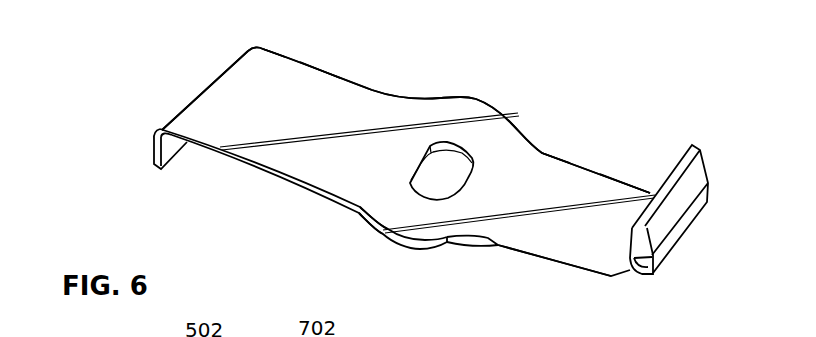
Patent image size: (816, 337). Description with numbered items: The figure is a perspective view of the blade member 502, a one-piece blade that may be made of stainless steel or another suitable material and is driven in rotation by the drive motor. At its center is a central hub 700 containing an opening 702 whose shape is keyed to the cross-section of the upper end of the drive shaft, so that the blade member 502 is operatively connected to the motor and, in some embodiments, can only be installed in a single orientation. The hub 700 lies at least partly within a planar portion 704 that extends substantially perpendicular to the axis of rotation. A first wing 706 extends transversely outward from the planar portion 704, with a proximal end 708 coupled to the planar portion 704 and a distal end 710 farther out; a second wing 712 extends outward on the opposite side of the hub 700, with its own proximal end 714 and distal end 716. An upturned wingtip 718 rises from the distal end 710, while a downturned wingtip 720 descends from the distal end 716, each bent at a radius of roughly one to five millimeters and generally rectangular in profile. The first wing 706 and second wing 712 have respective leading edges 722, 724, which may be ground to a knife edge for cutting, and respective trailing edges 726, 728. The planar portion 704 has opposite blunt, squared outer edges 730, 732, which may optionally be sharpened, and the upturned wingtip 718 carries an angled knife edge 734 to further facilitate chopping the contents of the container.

The central hub 700 is at (482, 143).
The opening 702 is at (447, 148).
The planar portion 704 is at (395, 212).
The first wing 706 is at (587, 190).
The proximal end of the first wing 708 is at (548, 152).
The distal end of the first wing 710 is at (613, 277).
The second wing 712 is at (332, 97).
The proximal end of the second wing 714 is at (327, 187).
The distal end of the second wing 716 is at (277, 53).
The upturned wingtip 718 is at (697, 177).
The downturned wingtip 720 is at (176, 156).
The leading edge of the first wing 722 is at (532, 255).
The leading edge of the second wing 724 is at (293, 60).
The trailing edge of the first wing 726 is at (620, 177).
The trailing edge of the second wing 728 is at (257, 163).
The outer edge of the planar portion 730 is at (367, 90).
The outer edge of the planar portion 732 is at (480, 95).
The angled knife edge of the first wingtip 734 is at (637, 270).
The blade member 502 is at (215, 122).